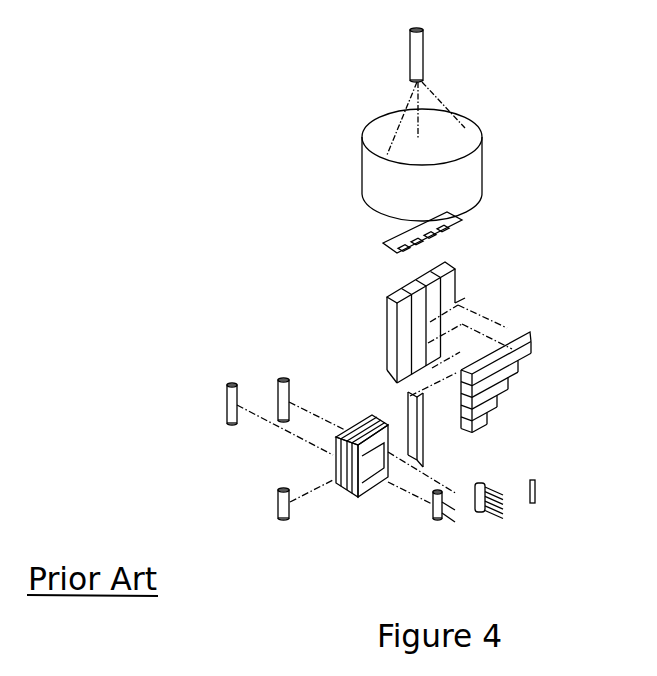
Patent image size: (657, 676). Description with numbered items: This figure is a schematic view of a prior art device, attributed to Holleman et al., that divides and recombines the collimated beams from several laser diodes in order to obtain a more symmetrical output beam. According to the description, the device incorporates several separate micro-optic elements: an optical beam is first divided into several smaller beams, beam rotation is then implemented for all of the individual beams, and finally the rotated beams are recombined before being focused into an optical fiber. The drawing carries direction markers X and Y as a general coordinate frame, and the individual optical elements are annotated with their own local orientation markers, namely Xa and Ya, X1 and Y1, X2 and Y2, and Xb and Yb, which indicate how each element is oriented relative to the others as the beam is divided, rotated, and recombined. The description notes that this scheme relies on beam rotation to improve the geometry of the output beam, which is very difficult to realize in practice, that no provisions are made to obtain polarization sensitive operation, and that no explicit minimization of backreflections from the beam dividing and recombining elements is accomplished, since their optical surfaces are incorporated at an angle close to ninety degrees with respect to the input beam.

The X direction of thin plate a Xa is at (408, 429).
The Y direction of thin plate a Ya is at (414, 462).
The X direction of step mirror 1 X1 is at (433, 438).
The Y direction of step mirror 1 Y1 is at (433, 438).
The X direction of slotted strip 2 X2 is at (364, 252).
The Y direction of slotted strip 2 Y2 is at (401, 263).
The X direction of element b Xb is at (438, 220).
The Y direction of element b Yb is at (430, 222).
The X coordinate axis X is at (523, 513).
The Y coordinate axis Y is at (523, 513).